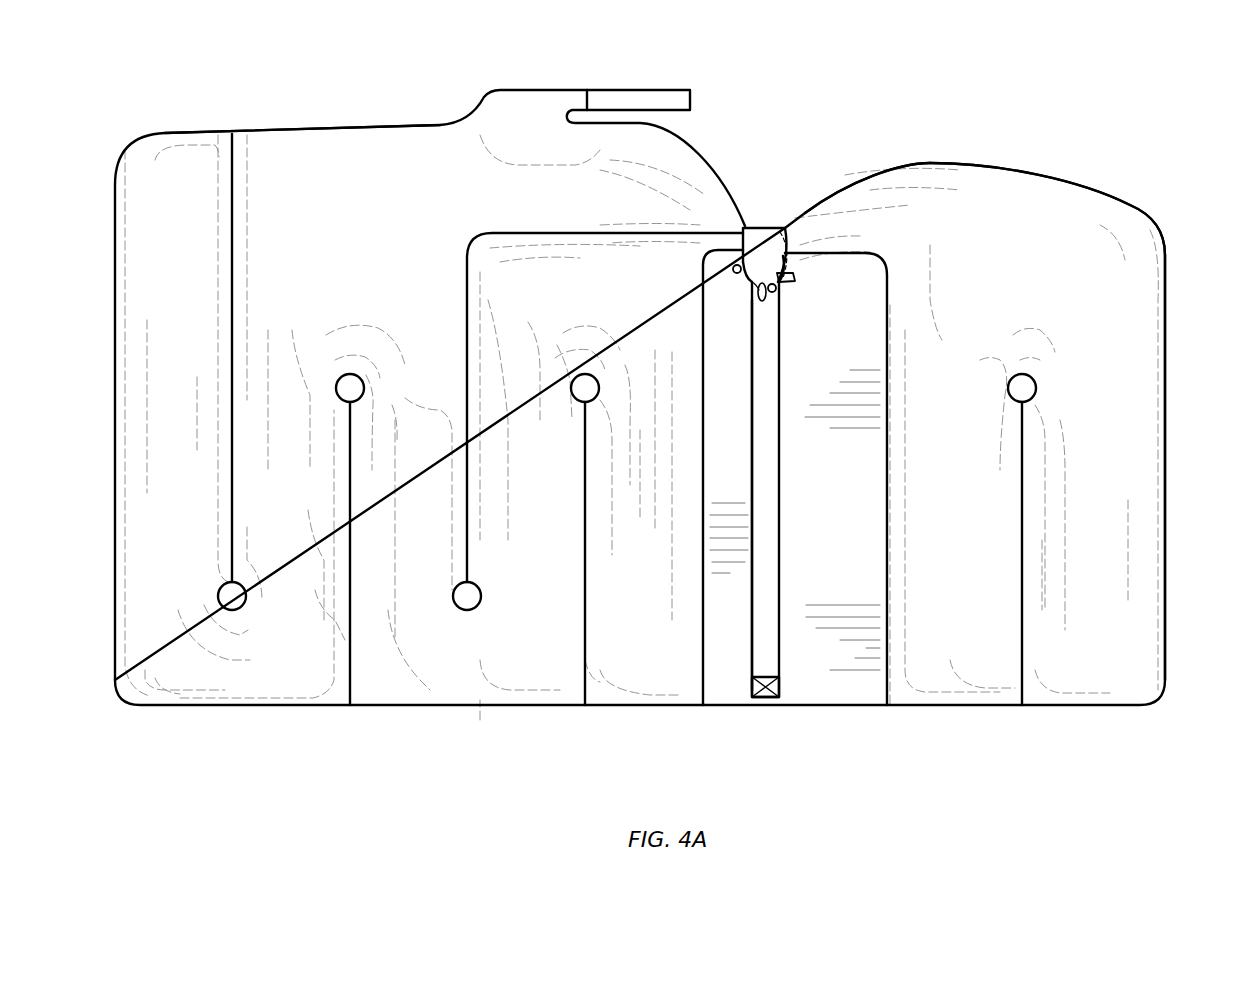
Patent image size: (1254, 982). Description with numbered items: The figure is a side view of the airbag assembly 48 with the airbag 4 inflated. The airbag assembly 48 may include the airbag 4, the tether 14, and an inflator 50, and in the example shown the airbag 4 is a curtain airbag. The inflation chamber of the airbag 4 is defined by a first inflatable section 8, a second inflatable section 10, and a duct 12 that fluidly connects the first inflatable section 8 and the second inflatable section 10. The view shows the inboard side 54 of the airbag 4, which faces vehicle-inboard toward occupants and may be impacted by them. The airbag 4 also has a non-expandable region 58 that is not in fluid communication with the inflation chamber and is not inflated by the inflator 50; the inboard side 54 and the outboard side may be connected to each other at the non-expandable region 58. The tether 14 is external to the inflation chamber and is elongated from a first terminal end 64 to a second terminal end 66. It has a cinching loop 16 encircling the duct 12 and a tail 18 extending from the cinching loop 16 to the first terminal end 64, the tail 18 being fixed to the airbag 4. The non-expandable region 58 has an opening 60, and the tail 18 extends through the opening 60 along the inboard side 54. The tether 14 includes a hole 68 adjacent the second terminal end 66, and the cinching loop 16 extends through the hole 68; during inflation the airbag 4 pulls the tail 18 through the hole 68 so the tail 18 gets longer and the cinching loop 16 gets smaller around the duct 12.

The airbag 4 is at (209, 136).
The airbag assembly 48 is at (293, 118).
The second inflatable section 10 is at (428, 180).
The inflator 50 is at (652, 89).
The duct 12 is at (842, 215).
The cinching loop 16 is at (754, 232).
The first inflatable section 8 is at (1057, 237).
The inboard side 54 is at (1130, 368).
The non-expandable region 58 is at (835, 690).
The tether 14 is at (783, 566).
The tail 18 is at (763, 598).
The first terminal end 64 is at (763, 700).
The hole 68 is at (735, 264).
The second terminal end 66 is at (754, 285).
The opening 60 is at (792, 277).